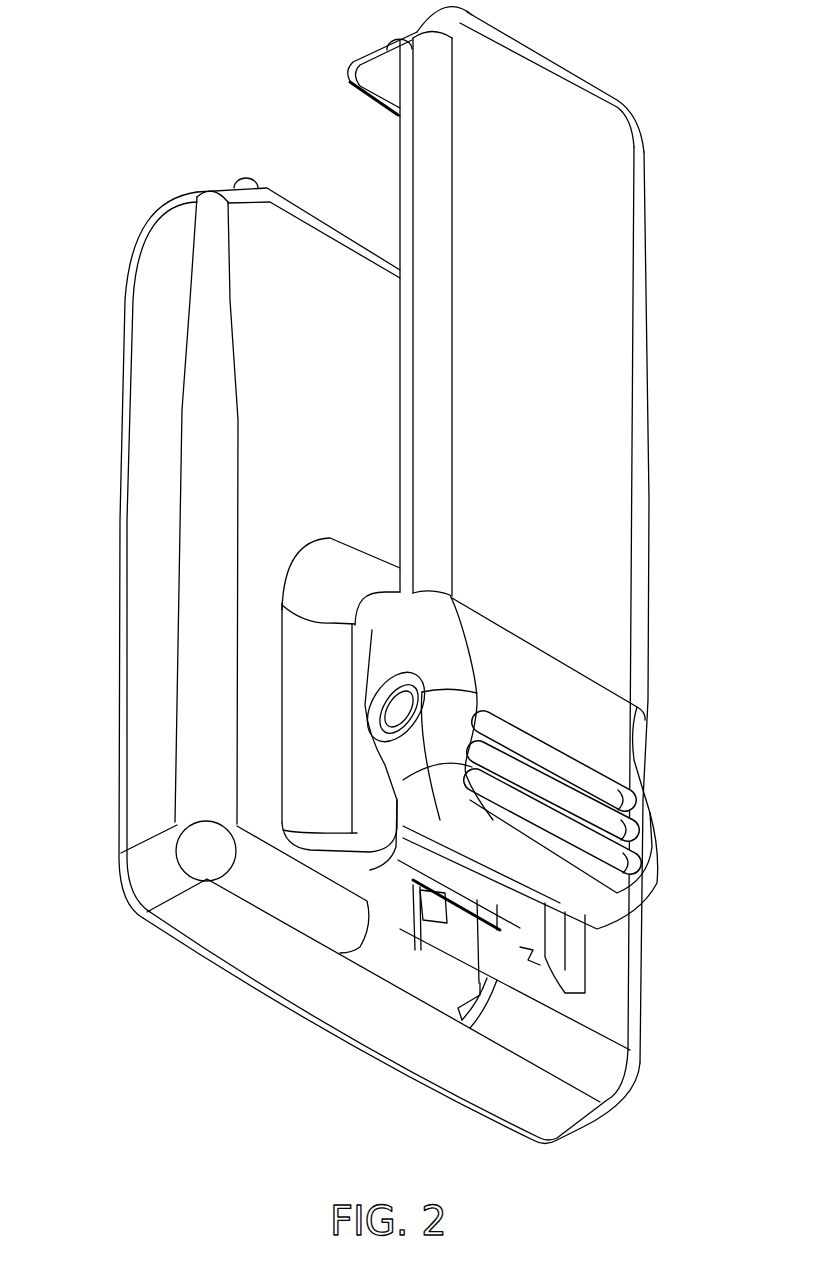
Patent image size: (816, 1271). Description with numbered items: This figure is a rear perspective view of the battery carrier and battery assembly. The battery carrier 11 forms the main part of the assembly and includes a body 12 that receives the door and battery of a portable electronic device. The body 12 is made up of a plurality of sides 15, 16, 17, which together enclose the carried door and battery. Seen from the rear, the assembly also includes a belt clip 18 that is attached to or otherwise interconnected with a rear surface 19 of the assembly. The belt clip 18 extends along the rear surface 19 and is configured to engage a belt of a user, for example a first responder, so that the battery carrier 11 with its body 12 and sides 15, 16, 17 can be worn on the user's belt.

The battery carrier 11 is at (268, 122).
The body 12 is at (106, 522).
The side 15 is at (633, 980).
The side 16 is at (157, 380).
The side 17 is at (302, 977).
The belt clip 18 is at (608, 390).
The rear surface 19 is at (273, 280).